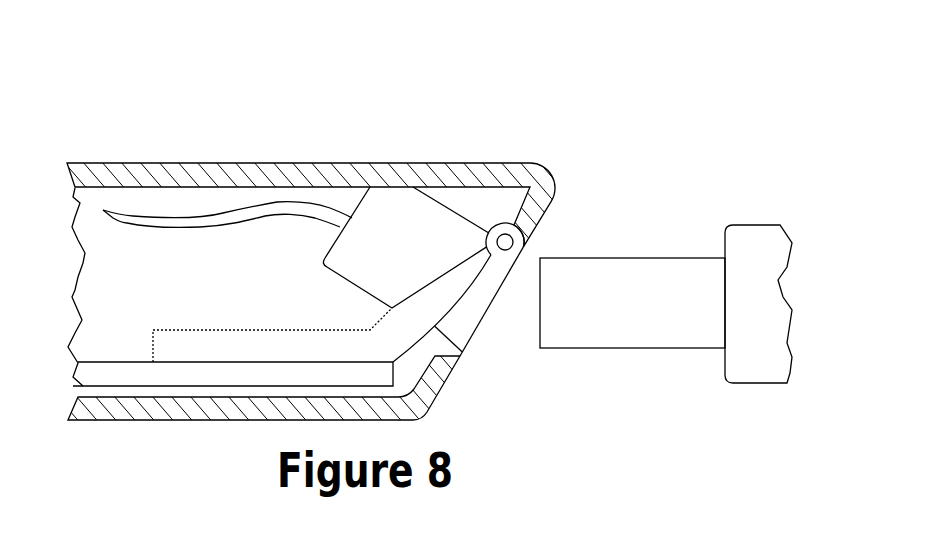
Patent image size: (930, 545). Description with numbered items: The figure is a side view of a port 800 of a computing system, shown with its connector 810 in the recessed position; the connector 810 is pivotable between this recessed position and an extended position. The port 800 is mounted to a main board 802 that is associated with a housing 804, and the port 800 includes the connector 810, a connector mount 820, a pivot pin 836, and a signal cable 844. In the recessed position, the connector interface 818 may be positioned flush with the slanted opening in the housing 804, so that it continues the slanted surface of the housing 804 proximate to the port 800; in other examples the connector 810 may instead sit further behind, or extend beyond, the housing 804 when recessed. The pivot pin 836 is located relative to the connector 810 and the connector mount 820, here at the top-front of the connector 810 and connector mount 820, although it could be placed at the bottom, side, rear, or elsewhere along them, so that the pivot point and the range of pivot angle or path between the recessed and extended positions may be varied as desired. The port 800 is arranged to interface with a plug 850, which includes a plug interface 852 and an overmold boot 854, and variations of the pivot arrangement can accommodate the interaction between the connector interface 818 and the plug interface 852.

The port 800 is at (470, 384).
The main board 802 is at (112, 362).
The housing 804 is at (467, 163).
The connector 810 is at (362, 289).
The connector interface 818 is at (498, 300).
The connector mount 820 is at (257, 329).
The pivot pin 836 is at (487, 244).
The signal cable 844 is at (227, 227).
The plug 850 is at (694, 199).
The plug interface 852 is at (633, 257).
The overmold boot 854 is at (760, 225).